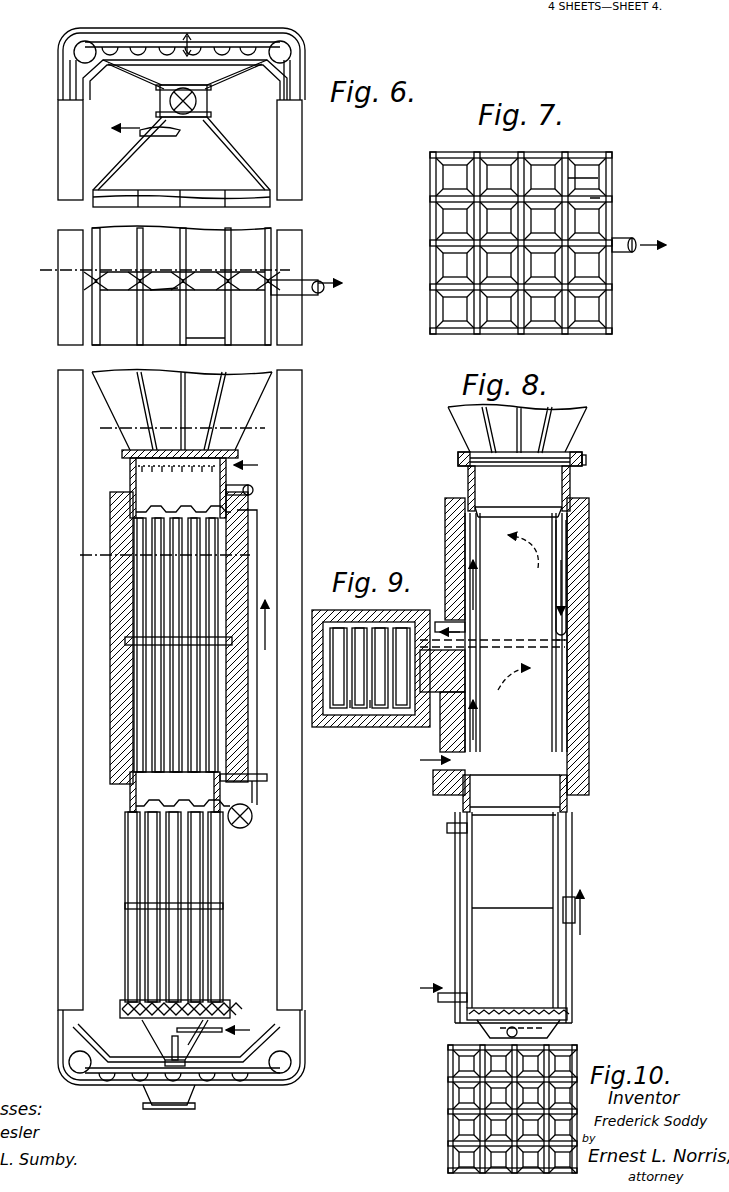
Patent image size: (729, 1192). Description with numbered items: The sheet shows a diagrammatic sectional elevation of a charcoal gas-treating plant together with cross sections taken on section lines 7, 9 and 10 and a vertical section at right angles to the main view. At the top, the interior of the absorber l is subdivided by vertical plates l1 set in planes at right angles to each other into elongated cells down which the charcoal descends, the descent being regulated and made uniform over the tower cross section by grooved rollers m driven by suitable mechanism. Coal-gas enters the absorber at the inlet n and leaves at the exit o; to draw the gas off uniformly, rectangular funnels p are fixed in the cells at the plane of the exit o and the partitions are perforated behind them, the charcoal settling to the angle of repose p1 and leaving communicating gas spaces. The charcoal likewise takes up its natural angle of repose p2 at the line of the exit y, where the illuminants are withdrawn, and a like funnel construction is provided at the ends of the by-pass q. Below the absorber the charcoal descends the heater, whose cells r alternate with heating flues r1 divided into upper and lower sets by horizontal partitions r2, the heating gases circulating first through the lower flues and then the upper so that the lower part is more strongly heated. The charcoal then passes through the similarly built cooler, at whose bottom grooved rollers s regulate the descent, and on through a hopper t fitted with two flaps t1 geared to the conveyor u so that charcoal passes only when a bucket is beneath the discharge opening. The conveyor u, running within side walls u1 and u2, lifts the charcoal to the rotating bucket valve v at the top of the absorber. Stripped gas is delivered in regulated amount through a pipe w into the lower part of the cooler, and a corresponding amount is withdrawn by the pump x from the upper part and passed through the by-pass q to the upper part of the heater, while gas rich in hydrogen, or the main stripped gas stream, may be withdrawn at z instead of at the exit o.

In FIG. 6, the conveyor u is at (152, 52).
In FIG. 6, the conveyor housing side wall u1 is at (290, 886).
In FIG. 6, the conveyor housing side wall u2 is at (62, 556).
In FIG. 6, the rotating bucket valve v is at (197, 101).
In FIG. 6, the hydrogen-rich gas outlet z is at (165, 130).
In FIG. 6, the section line 7- 7 is at (177, 266).
In FIG. 6, the rectangular funnels p is at (162, 282).
In FIG. 7, the rectangular funnels p is at (437, 219).
In FIG. 6, the angle of repose lines p1 is at (178, 288).
In FIG. 6, the angle of repose at exit y p2 is at (125, 646).
In FIG. 7, the absorber l is at (612, 331).
In FIG. 6, the vertical plates l1 is at (186, 338).
In FIG. 7, the vertical plates l1 is at (592, 198).
In FIG. 10, the vertical plates l1 is at (555, 1137).
In FIG. 6, the gas exit o is at (332, 298).
In FIG. 7, the gas exit o is at (626, 244).
In FIG. 6, the section line 10- 10 is at (180, 410).
In FIG. 6, the grooved rollers m is at (181, 470).
In FIG. 8, the grooved rollers m is at (505, 462).
In FIG. 6, the gas inlet n is at (253, 490).
In FIG. 6, the section line 9- 9 is at (172, 657).
In FIG. 6, the heater cells r is at (232, 580).
In FIG. 8, the heater cells r is at (516, 632).
In FIG. 9, the heater cells r is at (383, 645).
In FIG. 6, the heating flues r1 is at (195, 692).
In FIG. 8, the heating flues r1 is at (556, 578).
In FIG. 9, the heating flues r1 is at (370, 703).
In FIG. 8, the horizontal partitions r2 is at (500, 640).
In FIG. 6, the by-pass q is at (268, 774).
In FIG. 6, the illuminants exit y is at (256, 790).
In FIG. 6, the pump x is at (243, 828).
In FIG. 6, the grooved rollers s is at (130, 1022).
In FIG. 8, the grooved rollers s is at (503, 1012).
In FIG. 6, the hopper t is at (168, 1040).
In FIG. 8, the hopper t is at (492, 1033).
In FIG. 6, the flaps t1 is at (186, 1042).
In FIG. 6, the stripped gas pipe w is at (225, 1027).
In FIG. 8, the stripped gas pipe w is at (548, 1036).